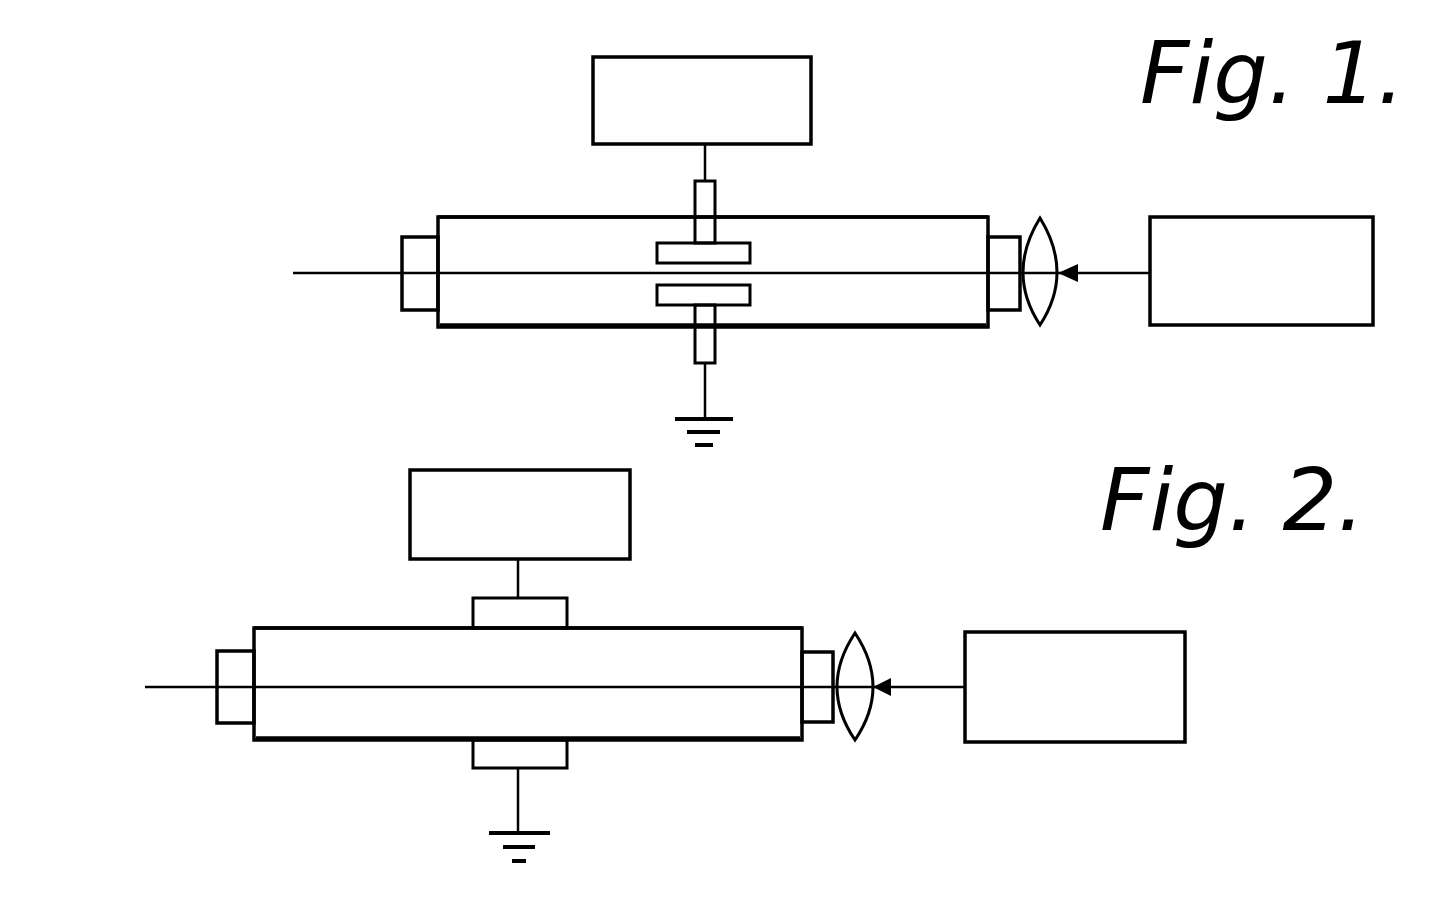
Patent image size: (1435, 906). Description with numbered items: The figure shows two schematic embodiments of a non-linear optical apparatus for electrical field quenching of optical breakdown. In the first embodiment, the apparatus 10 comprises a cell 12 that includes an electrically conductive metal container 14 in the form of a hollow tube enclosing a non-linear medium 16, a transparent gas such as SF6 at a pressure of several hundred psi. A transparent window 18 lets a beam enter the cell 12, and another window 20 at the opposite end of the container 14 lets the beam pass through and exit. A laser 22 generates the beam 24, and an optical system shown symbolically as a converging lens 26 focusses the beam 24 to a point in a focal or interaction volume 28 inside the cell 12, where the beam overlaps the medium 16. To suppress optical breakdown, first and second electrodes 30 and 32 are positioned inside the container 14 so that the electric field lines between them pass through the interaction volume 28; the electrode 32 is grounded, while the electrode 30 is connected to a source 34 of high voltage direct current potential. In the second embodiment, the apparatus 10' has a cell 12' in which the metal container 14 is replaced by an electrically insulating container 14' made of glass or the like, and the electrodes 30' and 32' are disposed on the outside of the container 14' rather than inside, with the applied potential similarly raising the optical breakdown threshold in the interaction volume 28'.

In FIG. 1, the non-linear optical apparatus 10 is at (360, 96).
In FIG. 2, the non-linear optical apparatus 10' is at (212, 540).
In FIG. 1, the cell 12 is at (705, 214).
In FIG. 2, the cell 12' is at (526, 626).
In FIG. 1, the electrically conductive metal container 14 is at (713, 175).
In FIG. 2, the electrically insulating container 14' is at (540, 582).
In FIG. 1, the non-linear medium 16 is at (948, 237).
In FIG. 2, the non-linear medium 16 is at (378, 730).
In FIG. 1, the transparent window 18 is at (1003, 243).
In FIG. 2, the transparent window 18 is at (817, 653).
In FIG. 1, the window 20 is at (415, 237).
In FIG. 2, the window 20 is at (233, 724).
In FIG. 1, the laser 22 is at (1257, 217).
In FIG. 2, the laser 22 is at (1065, 632).
In FIG. 1, the beam 24 is at (1077, 277).
In FIG. 2, the beam 24 is at (913, 690).
In FIG. 1, the converging lens 26 is at (1037, 325).
In FIG. 2, the converging lens 26 is at (865, 643).
In FIG. 1, the focal or interaction volume 28 is at (818, 215).
In FIG. 2, the interaction volume 28' is at (670, 629).
In FIG. 1, the first electrode 30 is at (731, 213).
In FIG. 2, the first electrode 30' is at (578, 601).
In FIG. 1, the second electrode 32 is at (734, 365).
In FIG. 2, the second electrode 32' is at (565, 800).
In FIG. 1, the source of high voltage direct current potential 34 is at (812, 78).
In FIG. 2, the source of high voltage direct current potential 34 is at (410, 470).